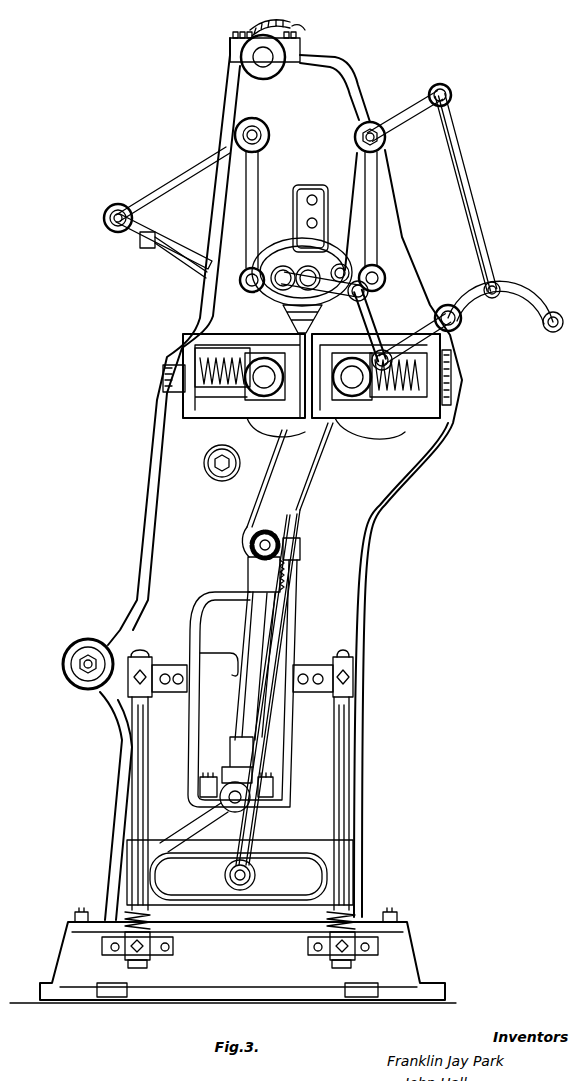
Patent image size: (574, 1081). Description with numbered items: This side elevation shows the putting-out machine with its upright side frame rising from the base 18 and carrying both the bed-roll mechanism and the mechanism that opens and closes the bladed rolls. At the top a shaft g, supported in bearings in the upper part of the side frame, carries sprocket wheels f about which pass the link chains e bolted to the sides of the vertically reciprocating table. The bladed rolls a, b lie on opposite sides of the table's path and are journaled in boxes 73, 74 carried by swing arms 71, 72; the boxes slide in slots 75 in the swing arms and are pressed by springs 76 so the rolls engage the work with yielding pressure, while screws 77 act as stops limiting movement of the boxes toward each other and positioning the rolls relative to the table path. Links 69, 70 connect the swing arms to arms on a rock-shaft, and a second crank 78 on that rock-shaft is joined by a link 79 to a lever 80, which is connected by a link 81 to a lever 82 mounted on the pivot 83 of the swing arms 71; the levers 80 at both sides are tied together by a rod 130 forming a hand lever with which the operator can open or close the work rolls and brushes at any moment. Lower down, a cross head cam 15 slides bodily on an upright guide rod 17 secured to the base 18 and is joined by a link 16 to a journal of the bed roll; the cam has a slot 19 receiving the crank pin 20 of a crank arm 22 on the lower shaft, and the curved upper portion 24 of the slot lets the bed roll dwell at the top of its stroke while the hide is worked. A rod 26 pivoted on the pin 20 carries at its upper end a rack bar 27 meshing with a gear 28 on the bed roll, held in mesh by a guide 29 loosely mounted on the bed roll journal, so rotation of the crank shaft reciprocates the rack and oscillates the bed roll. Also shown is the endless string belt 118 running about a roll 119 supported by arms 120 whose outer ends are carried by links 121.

The link chains e is at (270, 27).
The sprocket wheels f is at (298, 34).
The shaft g is at (265, 63).
The cross head cams 15 is at (292, 833).
The links 16 is at (242, 695).
The upright guide rods 17 is at (140, 752).
The base 18 is at (153, 985).
The slots 19 is at (160, 863).
The crank pin 20 is at (226, 875).
The crank arm 22 is at (262, 700).
The curved upper portions 24 is at (192, 843).
The link or rod 26 is at (266, 725).
The rack bar 27 is at (289, 595).
The gear 28 is at (250, 545).
The guide 29 is at (301, 547).
The link 69 is at (285, 300).
The link 70 is at (276, 249).
The swing arm 71 is at (399, 215).
The swing arm 72 is at (247, 218).
The box 73 is at (350, 365).
The box 74 is at (250, 364).
The slots 75 is at (205, 398).
The springs 76 is at (213, 363).
The screws 77 is at (326, 365).
The second crank 78 is at (343, 267).
The link 79 is at (380, 336).
The lever 80 is at (453, 331).
The link 81 is at (478, 195).
The lever 82 is at (403, 120).
The pivot 83 is at (352, 140).
The endless string belt 118 is at (184, 276).
The roll 119 is at (117, 233).
The cranks or arms 120 is at (165, 255).
The links 121 is at (178, 183).
The rod 130 is at (547, 329).
The bladed roll a is at (354, 378).
The bladed roll b is at (264, 378).